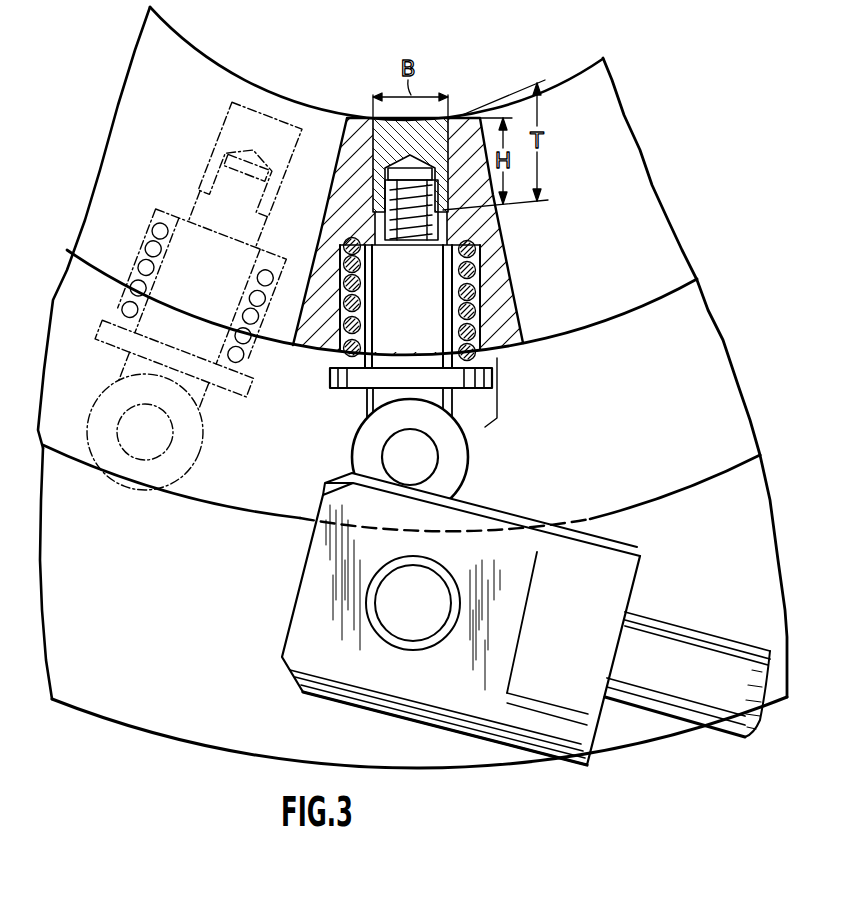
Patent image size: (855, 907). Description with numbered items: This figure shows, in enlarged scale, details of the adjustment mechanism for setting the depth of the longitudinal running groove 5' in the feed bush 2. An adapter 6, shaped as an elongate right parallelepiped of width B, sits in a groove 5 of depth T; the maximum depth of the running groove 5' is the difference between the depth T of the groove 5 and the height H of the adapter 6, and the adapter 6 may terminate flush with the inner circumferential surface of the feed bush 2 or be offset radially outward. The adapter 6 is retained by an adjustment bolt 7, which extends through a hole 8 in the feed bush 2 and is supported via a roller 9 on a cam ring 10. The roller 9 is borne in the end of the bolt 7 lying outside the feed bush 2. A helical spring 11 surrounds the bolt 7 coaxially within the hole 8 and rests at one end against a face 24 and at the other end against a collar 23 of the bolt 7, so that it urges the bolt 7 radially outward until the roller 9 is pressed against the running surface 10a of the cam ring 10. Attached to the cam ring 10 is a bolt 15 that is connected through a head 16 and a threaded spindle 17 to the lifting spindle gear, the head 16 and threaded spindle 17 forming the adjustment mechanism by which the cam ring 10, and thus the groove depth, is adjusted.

The feed bush 2 is at (605, 116).
The groove 5 is at (403, 235).
The running groove 5' is at (197, 269).
The adapter 6 is at (430, 142).
The bolt 7 is at (498, 365).
The hole 8 is at (342, 292).
The roller 9 is at (462, 452).
The cam ring 10 is at (150, 702).
The running surface 10a is at (650, 503).
The helical spring 11 is at (338, 357).
The bolt 15 is at (410, 630).
The head 16 is at (545, 707).
The threaded spindle 17 is at (692, 688).
The collar 23 is at (353, 384).
The face 24 is at (358, 228).